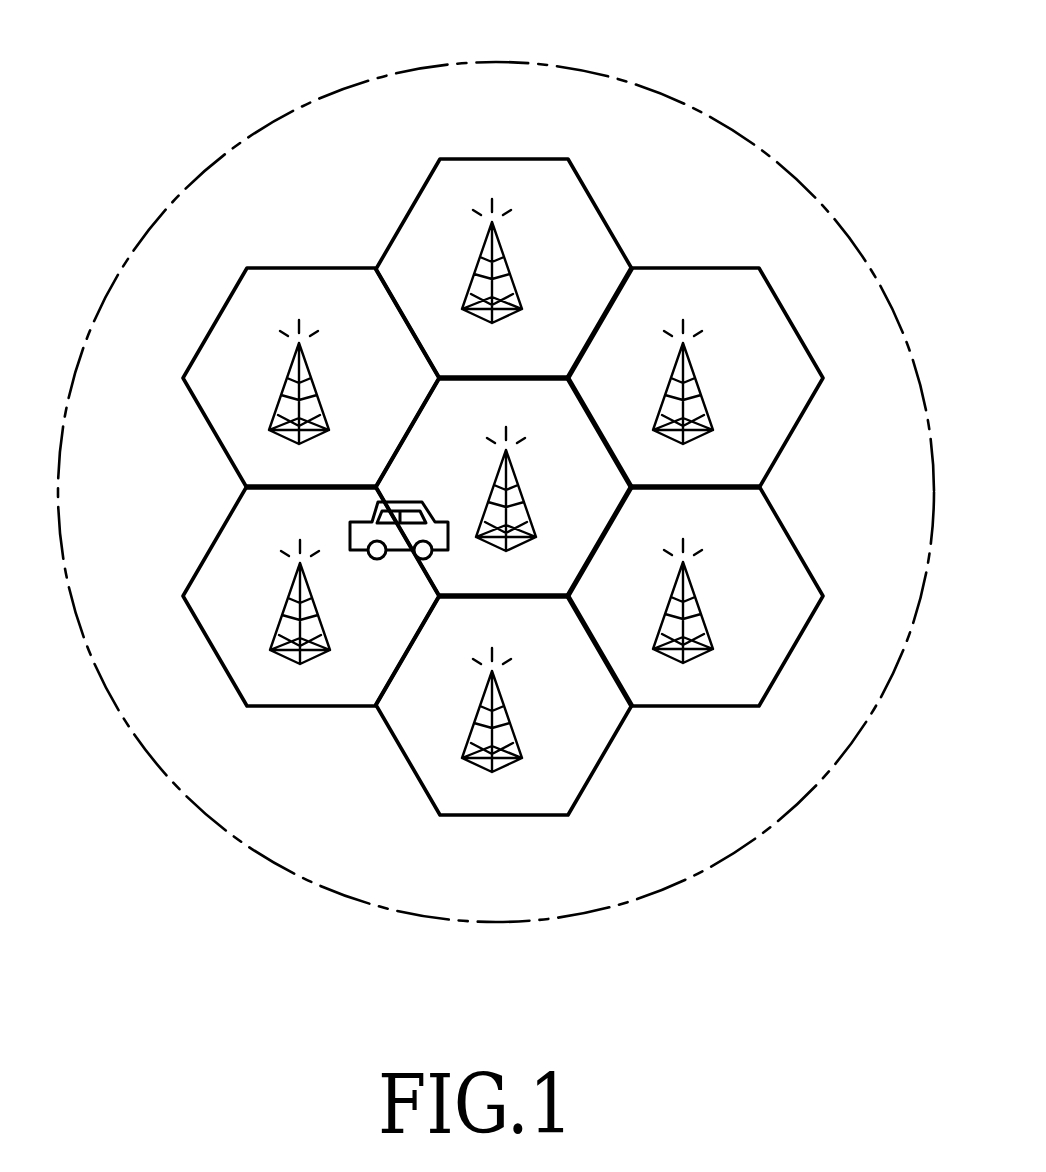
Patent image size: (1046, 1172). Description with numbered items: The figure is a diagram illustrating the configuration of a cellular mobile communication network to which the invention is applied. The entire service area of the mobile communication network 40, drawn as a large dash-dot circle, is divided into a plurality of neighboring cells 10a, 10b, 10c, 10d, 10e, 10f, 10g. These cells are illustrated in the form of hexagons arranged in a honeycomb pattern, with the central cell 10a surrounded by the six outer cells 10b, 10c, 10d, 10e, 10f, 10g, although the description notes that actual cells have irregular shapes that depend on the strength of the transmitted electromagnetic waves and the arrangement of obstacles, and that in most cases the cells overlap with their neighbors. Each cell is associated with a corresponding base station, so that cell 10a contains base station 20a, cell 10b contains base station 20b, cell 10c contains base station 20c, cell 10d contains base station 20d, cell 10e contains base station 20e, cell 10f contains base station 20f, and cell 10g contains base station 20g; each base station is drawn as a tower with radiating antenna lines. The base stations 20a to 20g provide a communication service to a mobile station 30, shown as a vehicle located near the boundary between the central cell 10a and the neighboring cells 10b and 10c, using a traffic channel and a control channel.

The cell 10a is at (490, 377).
The cell 10b is at (212, 433).
The cell 10c is at (210, 653).
The cell 10d is at (598, 760).
The cell 10e is at (792, 540).
The cell 10f is at (700, 268).
The cell 10g is at (505, 158).
The base station 20a is at (527, 505).
The base station 20b is at (322, 395).
The base station 20c is at (322, 630).
The base station 20d is at (515, 720).
The base station 20e is at (700, 615).
The base station 20f is at (707, 395).
The base station 20g is at (515, 268).
The mobile station 30 is at (405, 497).
The mobile communication network 40 is at (497, 62).